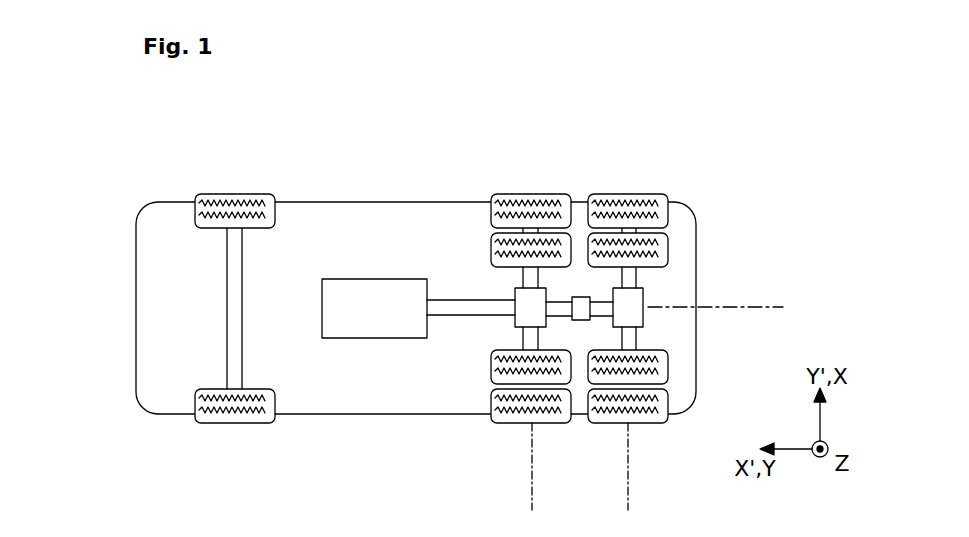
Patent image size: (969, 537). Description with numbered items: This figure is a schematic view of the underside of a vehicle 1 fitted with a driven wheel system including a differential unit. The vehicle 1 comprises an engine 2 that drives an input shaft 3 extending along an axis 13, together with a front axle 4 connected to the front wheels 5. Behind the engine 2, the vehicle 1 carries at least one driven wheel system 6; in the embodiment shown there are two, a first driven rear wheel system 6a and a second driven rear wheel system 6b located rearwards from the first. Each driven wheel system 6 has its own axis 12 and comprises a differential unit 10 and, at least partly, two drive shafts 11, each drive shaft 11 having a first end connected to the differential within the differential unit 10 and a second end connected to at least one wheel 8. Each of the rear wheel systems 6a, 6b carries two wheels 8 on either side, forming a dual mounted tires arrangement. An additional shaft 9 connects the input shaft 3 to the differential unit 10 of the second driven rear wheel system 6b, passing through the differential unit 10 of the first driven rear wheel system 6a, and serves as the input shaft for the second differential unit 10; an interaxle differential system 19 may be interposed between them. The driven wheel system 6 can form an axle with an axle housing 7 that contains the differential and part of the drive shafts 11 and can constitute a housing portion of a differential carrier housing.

The vehicle 1 is at (122, 290).
The engine 2 is at (364, 296).
The input shaft 3 is at (465, 300).
The front axle 4 is at (232, 350).
The front wheels 5 is at (232, 208).
The driven wheel system 6 is at (608, 298).
The first driven rear wheel system 6a is at (608, 298).
The second driven rear wheel system 6b is at (628, 308).
The axle housing 7 is at (531, 268).
The wheel 8 is at (508, 194).
The additional shaft 9 is at (598, 318).
The differential unit 10 is at (514, 296).
The drive shaft 11 is at (524, 340).
The axis 12 is at (533, 490).
The axis 13 is at (755, 307).
The interaxle differential system 19 is at (576, 299).